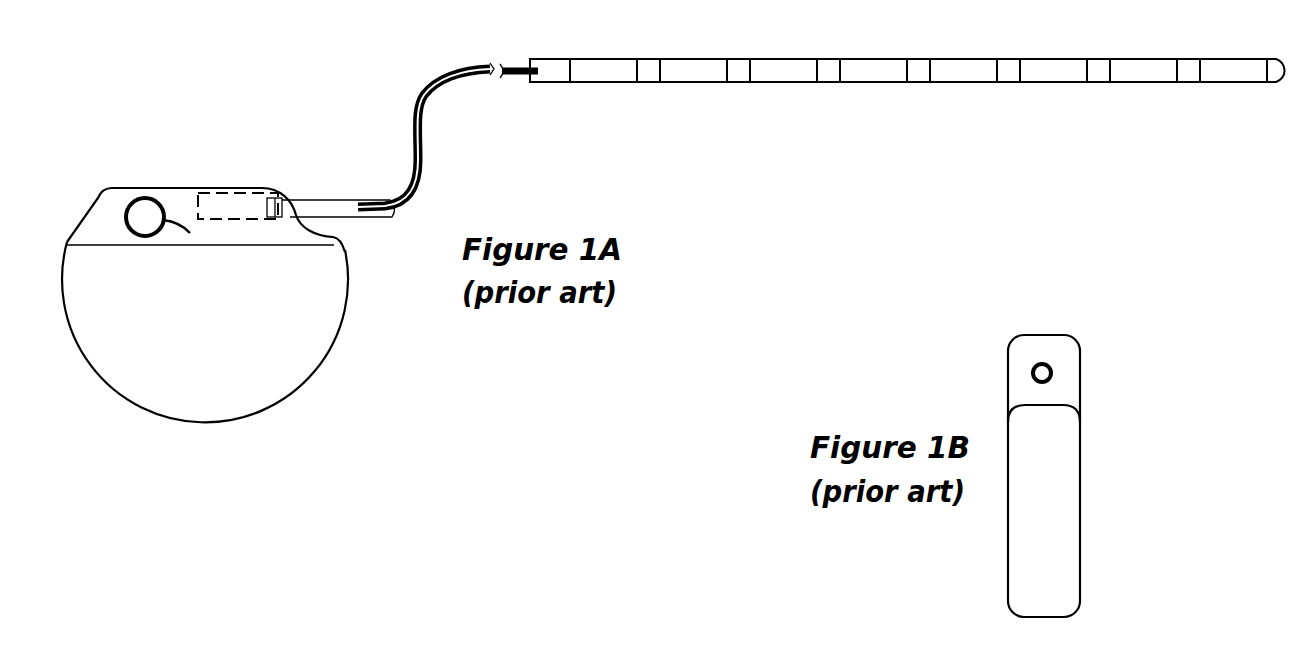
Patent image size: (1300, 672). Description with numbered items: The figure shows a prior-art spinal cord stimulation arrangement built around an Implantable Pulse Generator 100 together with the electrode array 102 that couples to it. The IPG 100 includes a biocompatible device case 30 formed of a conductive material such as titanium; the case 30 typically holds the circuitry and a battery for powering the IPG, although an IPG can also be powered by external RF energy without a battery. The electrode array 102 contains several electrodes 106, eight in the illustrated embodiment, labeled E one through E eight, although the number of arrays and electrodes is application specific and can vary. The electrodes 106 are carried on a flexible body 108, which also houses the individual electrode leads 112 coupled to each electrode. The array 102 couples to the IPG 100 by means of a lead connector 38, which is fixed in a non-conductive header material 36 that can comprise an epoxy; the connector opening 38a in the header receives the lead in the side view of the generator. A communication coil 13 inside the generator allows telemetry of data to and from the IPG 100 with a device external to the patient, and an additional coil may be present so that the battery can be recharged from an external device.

In FIG. 1A, the Implantable Pulse Generator 100 is at (160, 92).
In FIG. 1B, the Implantable Pulse Generator 100 is at (1041, 316).
In FIG. 1A, the device case 30 is at (347, 302).
In FIG. 1B, the device case 30 is at (1080, 437).
In FIG. 1A, the header material 36 is at (97, 200).
In FIG. 1B, the header material 36 is at (1080, 387).
In FIG. 1A, the lead connector 38 is at (227, 195).
In FIG. 1B, the connector opening 38a is at (1035, 365).
In FIG. 1A, the communication coil 13 is at (133, 236).
In FIG. 1A, the electrode leads 112 is at (432, 78).
In FIG. 1A, the electrode array 102 is at (583, 34).
In FIG. 1A, the electrodes 106 is at (785, 57).
In FIG. 1A, the flexible body 108 is at (648, 57).